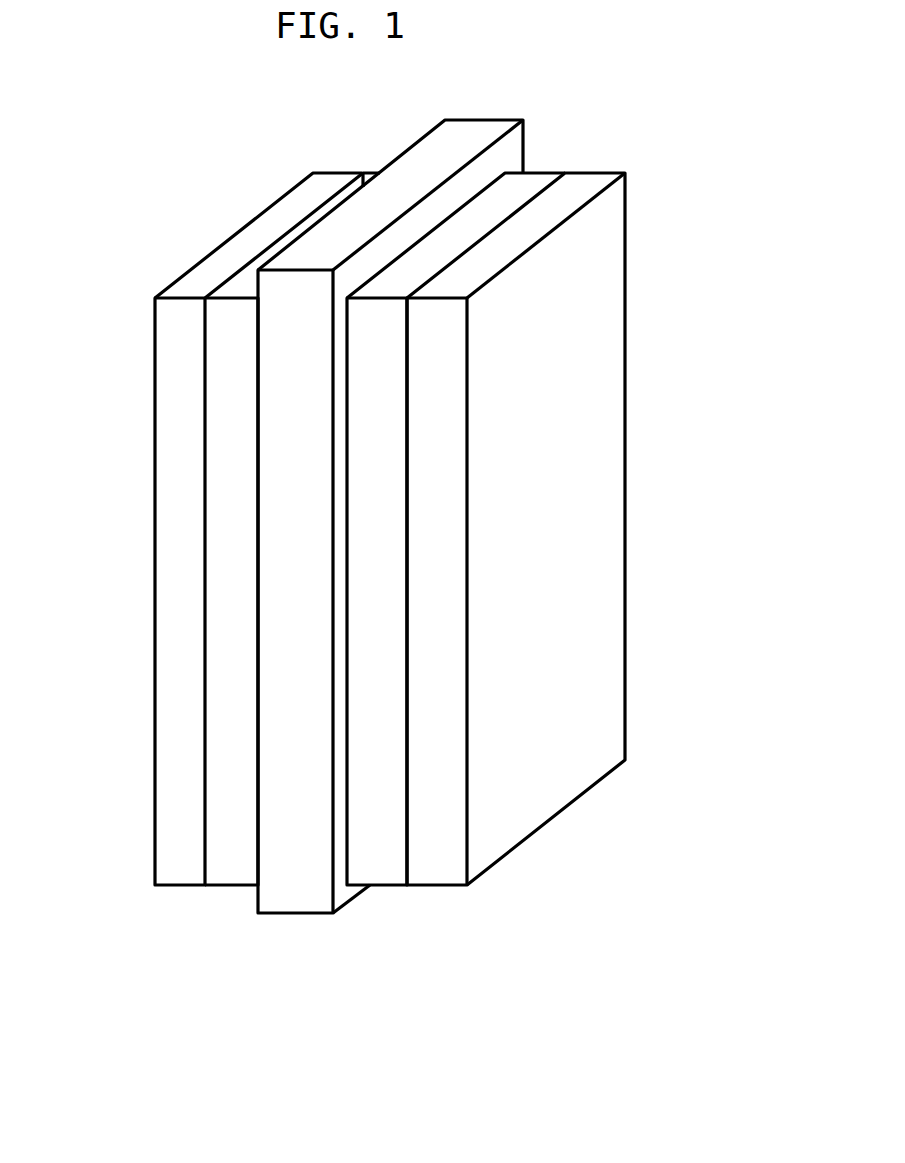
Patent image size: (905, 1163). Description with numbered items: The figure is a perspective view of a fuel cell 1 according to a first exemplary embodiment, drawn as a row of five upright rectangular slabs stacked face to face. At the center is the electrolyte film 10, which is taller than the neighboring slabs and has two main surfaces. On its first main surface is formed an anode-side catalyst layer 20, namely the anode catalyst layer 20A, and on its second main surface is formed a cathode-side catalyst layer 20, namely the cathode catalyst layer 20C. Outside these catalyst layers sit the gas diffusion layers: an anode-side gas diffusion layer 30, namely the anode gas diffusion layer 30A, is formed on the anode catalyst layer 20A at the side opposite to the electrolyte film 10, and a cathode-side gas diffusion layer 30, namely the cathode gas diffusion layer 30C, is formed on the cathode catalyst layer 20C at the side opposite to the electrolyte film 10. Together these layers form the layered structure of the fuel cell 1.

The fuel cell 1 is at (88, 153).
The electrolyte film 10 is at (295, 885).
The catalyst layer 20 is at (374, 642).
The anode catalyst layer 20A is at (235, 857).
The cathode catalyst layer 20C is at (380, 857).
The gas diffusion layer 30 is at (347, 642).
The anode gas diffusion layer 30A is at (177, 857).
The cathode gas diffusion layer 30C is at (433, 857).